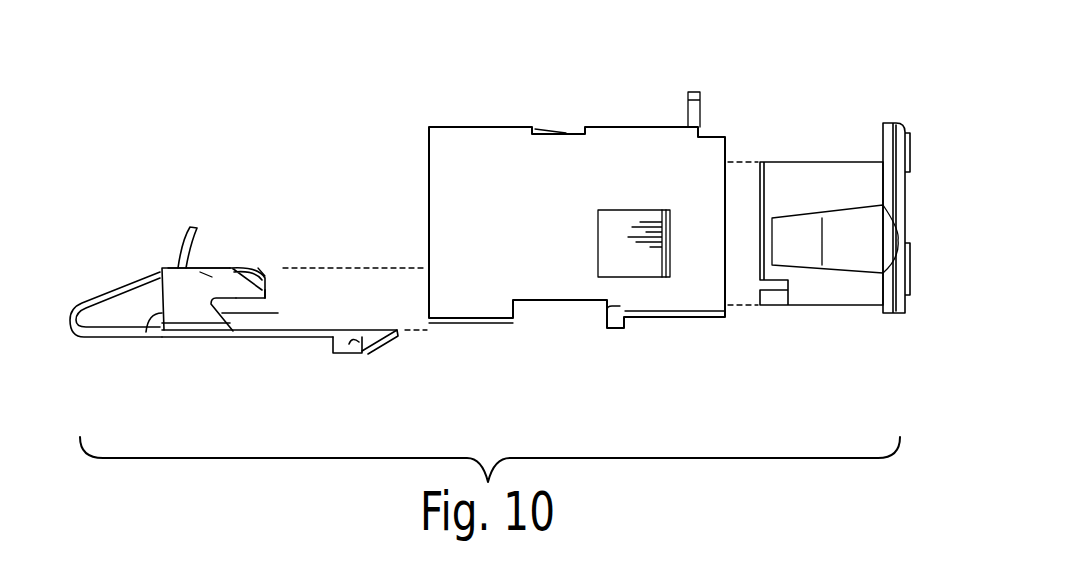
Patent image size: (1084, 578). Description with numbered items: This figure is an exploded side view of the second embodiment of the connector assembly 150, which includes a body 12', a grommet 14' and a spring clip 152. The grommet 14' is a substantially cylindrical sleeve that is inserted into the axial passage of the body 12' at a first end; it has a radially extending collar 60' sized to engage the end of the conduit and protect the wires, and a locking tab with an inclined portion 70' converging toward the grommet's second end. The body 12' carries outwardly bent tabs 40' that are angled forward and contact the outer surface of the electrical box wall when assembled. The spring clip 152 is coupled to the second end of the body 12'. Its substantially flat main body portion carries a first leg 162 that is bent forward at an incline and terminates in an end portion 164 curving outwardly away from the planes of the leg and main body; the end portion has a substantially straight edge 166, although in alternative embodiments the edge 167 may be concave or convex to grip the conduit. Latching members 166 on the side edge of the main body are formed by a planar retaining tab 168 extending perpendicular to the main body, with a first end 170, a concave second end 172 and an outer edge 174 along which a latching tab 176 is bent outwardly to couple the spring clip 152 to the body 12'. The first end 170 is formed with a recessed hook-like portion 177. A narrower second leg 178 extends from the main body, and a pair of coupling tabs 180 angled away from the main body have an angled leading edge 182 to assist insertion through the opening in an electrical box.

The body 12' is at (577, 188).
The tab 40' is at (625, 163).
The grommet 14' is at (821, 275).
The collar 60' is at (884, 255).
The inclined portion 70' is at (835, 192).
The connector assembly 150 is at (353, 198).
The spring clip 152 is at (323, 379).
The first leg 162 is at (107, 292).
The end portion 164 is at (163, 267).
The latching member 166 is at (203, 267).
The edge 167 is at (192, 225).
The retaining tab 168 is at (210, 277).
The first end 170 is at (266, 295).
The second end 172 is at (143, 337).
The outer edge 174 is at (232, 267).
The latching tab 176 is at (263, 270).
The hook-like portion 177 is at (270, 311).
The second leg 178 is at (293, 338).
The coupling tab 180 is at (362, 346).
The leading edge 182 is at (398, 338).